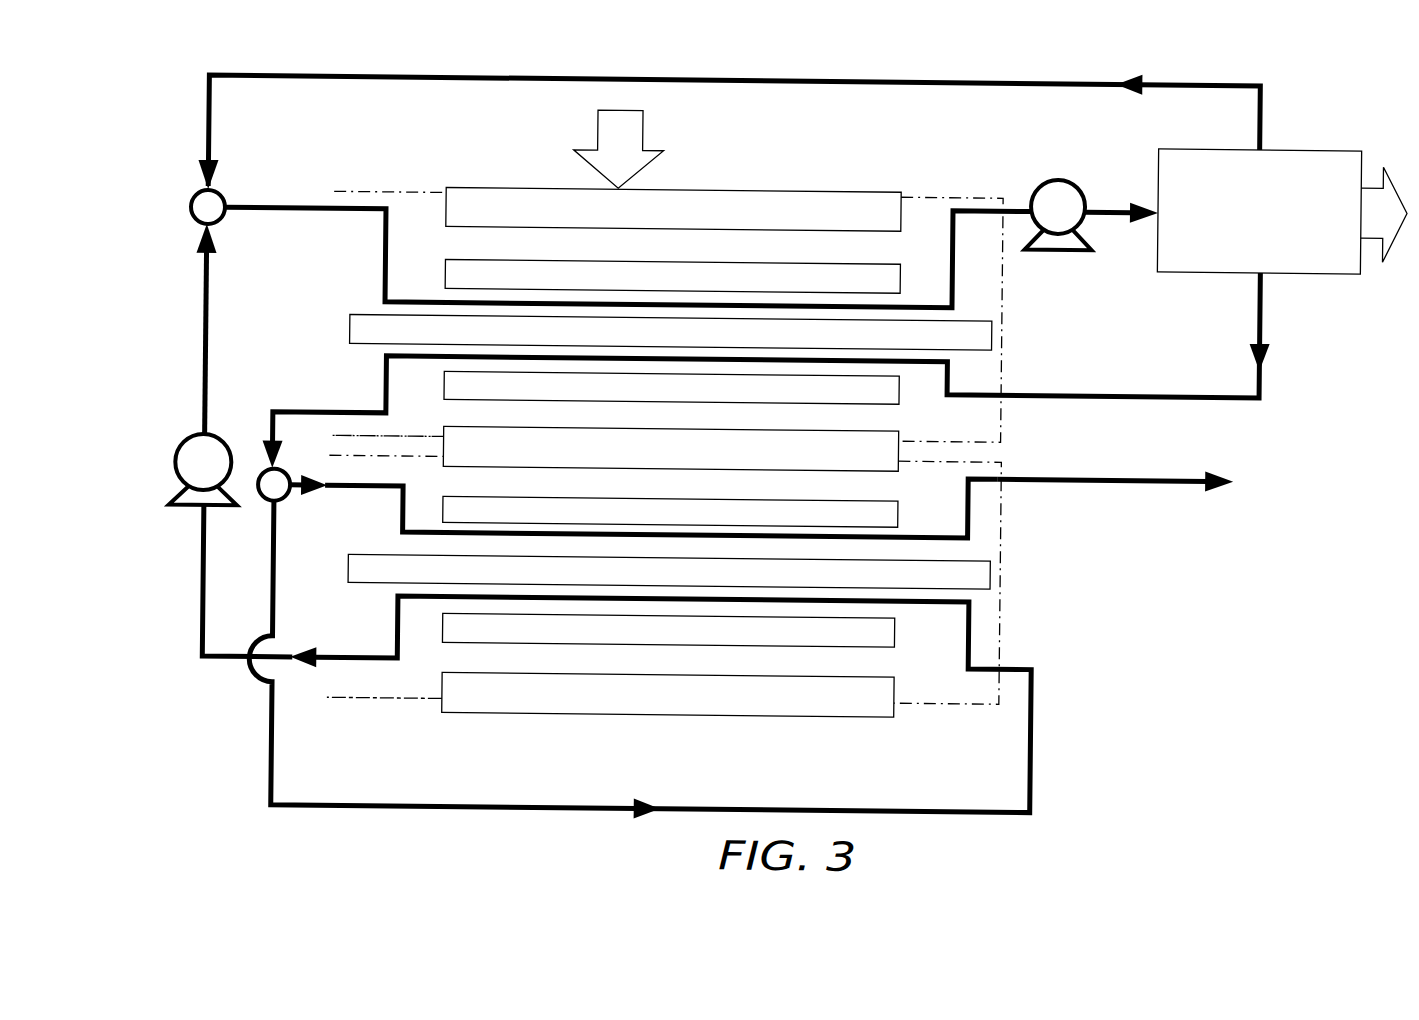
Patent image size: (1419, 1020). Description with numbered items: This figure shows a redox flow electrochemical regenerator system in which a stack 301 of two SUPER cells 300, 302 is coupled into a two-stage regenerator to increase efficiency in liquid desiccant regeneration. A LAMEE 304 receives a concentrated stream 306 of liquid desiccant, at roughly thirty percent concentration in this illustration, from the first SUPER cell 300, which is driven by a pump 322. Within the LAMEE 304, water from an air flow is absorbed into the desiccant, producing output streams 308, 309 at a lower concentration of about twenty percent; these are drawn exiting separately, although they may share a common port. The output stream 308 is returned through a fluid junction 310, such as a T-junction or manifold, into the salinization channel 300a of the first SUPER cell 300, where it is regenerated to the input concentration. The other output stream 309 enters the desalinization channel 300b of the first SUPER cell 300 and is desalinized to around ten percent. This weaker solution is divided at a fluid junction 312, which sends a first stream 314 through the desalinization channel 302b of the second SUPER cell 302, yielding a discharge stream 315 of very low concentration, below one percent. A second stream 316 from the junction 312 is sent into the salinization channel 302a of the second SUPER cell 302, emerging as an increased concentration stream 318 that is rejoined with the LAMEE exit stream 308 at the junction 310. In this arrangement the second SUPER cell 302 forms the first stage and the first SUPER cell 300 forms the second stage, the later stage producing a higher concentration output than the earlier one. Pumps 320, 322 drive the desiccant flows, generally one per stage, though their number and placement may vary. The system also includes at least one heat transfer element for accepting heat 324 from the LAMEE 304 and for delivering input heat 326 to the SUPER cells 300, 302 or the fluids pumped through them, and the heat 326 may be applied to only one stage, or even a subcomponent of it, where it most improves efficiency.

The first SUPER cell 300 is at (415, 203).
The salinization channel of first SUPER cell 300a is at (500, 297).
The desalinization channel of first SUPER cell 300b is at (823, 349).
The stack 301 is at (334, 152).
The second SUPER cell 302 is at (400, 688).
The salinization channel of second SUPER cell 302a is at (485, 602).
The desalinization channel of second SUPER cell 302b is at (828, 534).
The LAMEE 304 is at (1205, 266).
The concentrated stream 306 is at (965, 197).
The output stream 308 is at (1198, 74).
The output stream 309 is at (1082, 388).
The fluid junction 310 is at (190, 205).
The fluid junction 312 is at (288, 499).
The first stream 314 is at (360, 485).
The discharge stream 315 is at (1050, 476).
The second stream 316 is at (268, 771).
The increased concentration stream 318 is at (225, 662).
The pump 320 is at (178, 470).
The pump 322 is at (1058, 243).
The heat 324 is at (1368, 173).
The input heat 326 is at (643, 126).